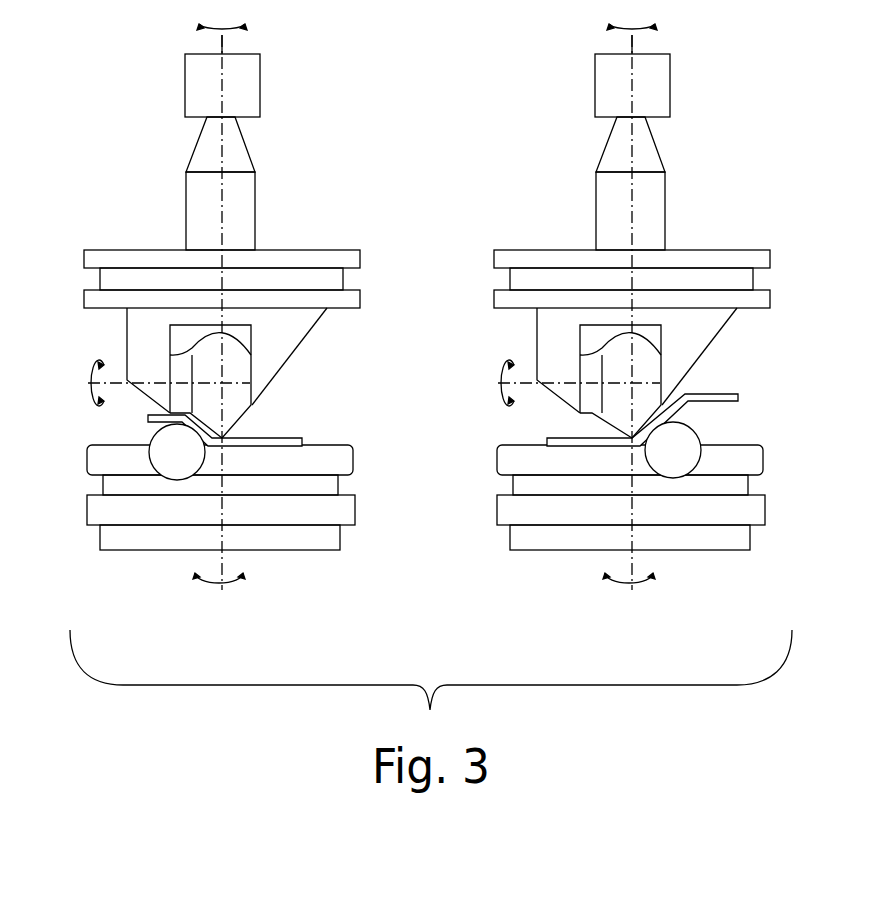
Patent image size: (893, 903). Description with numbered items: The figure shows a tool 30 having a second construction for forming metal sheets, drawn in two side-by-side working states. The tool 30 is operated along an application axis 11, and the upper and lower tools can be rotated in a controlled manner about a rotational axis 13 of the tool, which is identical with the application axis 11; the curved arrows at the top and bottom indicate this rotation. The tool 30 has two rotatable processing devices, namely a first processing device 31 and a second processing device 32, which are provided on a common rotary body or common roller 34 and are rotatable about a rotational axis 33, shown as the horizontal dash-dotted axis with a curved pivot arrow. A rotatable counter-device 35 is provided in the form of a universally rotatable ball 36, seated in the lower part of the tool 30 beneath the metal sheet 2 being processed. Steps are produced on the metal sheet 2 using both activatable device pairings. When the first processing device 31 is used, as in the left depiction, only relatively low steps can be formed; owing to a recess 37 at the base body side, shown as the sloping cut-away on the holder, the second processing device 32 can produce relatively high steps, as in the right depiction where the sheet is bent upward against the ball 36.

The metal sheet 2 is at (297, 443).
The application axis 11 is at (220, 50).
The rotational axis 13 is at (373, 302).
The tool 30 is at (272, 92).
The first processing device 31 is at (449, 312).
The second processing device 32 is at (379, 324).
The rotational axis 33 is at (88, 368).
The common roller 34 is at (230, 368).
The rotatable counter-device 35 is at (423, 416).
The universally rotatable ball 36 is at (422, 468).
The recess 37 is at (307, 333).